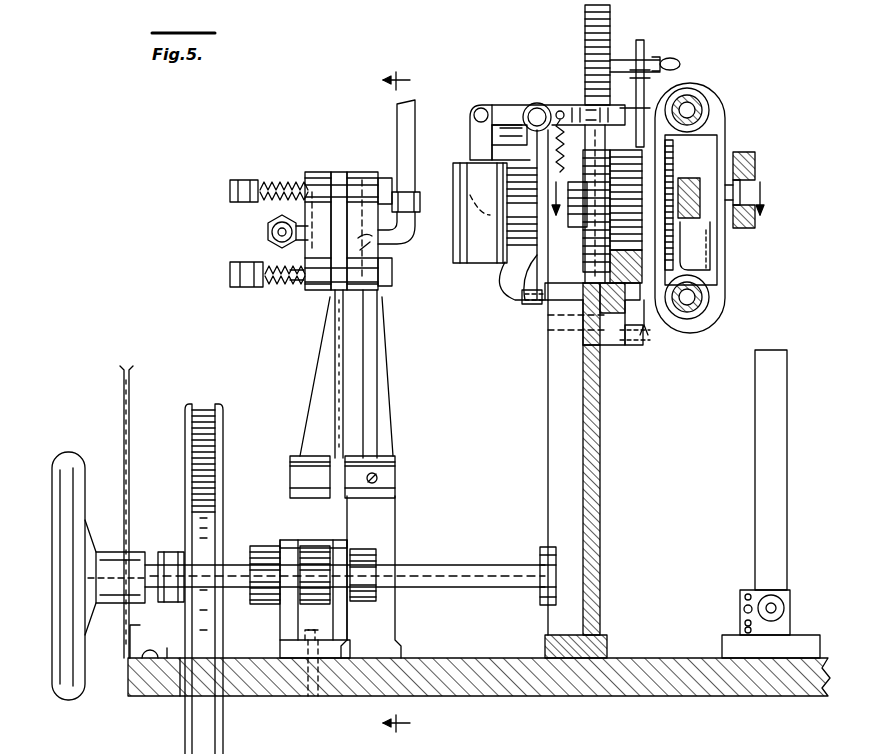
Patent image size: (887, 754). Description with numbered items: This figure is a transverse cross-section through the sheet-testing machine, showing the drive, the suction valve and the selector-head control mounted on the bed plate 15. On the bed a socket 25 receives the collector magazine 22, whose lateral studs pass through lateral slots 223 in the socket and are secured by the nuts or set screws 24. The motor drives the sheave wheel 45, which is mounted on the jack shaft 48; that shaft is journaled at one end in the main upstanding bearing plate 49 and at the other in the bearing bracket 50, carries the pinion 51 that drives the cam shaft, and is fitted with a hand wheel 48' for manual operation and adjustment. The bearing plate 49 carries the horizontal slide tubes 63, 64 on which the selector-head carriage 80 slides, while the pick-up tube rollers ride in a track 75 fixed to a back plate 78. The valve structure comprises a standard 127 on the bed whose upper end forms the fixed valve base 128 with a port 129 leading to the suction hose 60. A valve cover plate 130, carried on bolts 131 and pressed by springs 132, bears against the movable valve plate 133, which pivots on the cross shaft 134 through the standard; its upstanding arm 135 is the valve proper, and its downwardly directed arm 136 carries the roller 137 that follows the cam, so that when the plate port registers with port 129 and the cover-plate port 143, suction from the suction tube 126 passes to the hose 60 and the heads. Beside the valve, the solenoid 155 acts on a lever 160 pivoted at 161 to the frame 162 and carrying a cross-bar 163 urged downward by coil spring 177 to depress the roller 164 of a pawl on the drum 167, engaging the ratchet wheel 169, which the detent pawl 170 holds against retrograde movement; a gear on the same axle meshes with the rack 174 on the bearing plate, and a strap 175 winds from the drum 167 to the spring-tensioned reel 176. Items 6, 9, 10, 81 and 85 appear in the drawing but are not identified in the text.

The section line 6 is at (397, 401).
The plate 9 is at (639, 187).
The section line 10 is at (667, 189).
The bed plate 15 is at (650, 658).
The collector magazine 22 is at (755, 438).
The set screws 24 is at (766, 596).
The socket 25 is at (792, 620).
The sheave wheel 45 is at (223, 440).
The jack shaft 48 is at (350, 569).
The hand wheel 48' is at (100, 557).
The bearing plate 49 is at (600, 432).
The bearing bracket 50 is at (292, 618).
The pinion 51 is at (262, 546).
The suction hose 60 is at (416, 130).
The slide tube 63 is at (695, 98).
The slide tube 64 is at (700, 306).
The track 75 is at (756, 162).
The back plate 78 is at (738, 152).
The carriage 80 is at (725, 93).
The pin 81 is at (695, 246).
The rack 85 is at (674, 158).
The suction tube 126 is at (264, 228).
The standard 127 is at (385, 521).
The fixed valve base 128 is at (364, 172).
The port 129 is at (372, 252).
The valve cover plate 130 is at (318, 172).
The bolts 131 is at (282, 180).
The springs 132 is at (258, 265).
The movable valve plate 133 is at (347, 174).
The cross shaft 134 is at (397, 475).
The upstanding arm 135 is at (340, 360).
The downwardly directed arm 136 is at (333, 511).
The roller 137 is at (318, 546).
The port 143 is at (287, 288).
The solenoid 155 is at (468, 265).
The lever 160 is at (500, 104).
The pivot 161 is at (536, 104).
The frame 162 is at (512, 270).
The cross-bar 163 is at (588, 84).
The roller 164 is at (664, 66).
The drum 167 is at (610, 252).
The ratchet wheel 169 is at (610, 268).
The detent pawl 170 is at (592, 232).
The rack 174 is at (592, 330).
The strap 175 is at (572, 110).
The tension reel 176 is at (610, 15).
The coil spring 177 is at (480, 146).
The lateral slots 223 is at (788, 606).